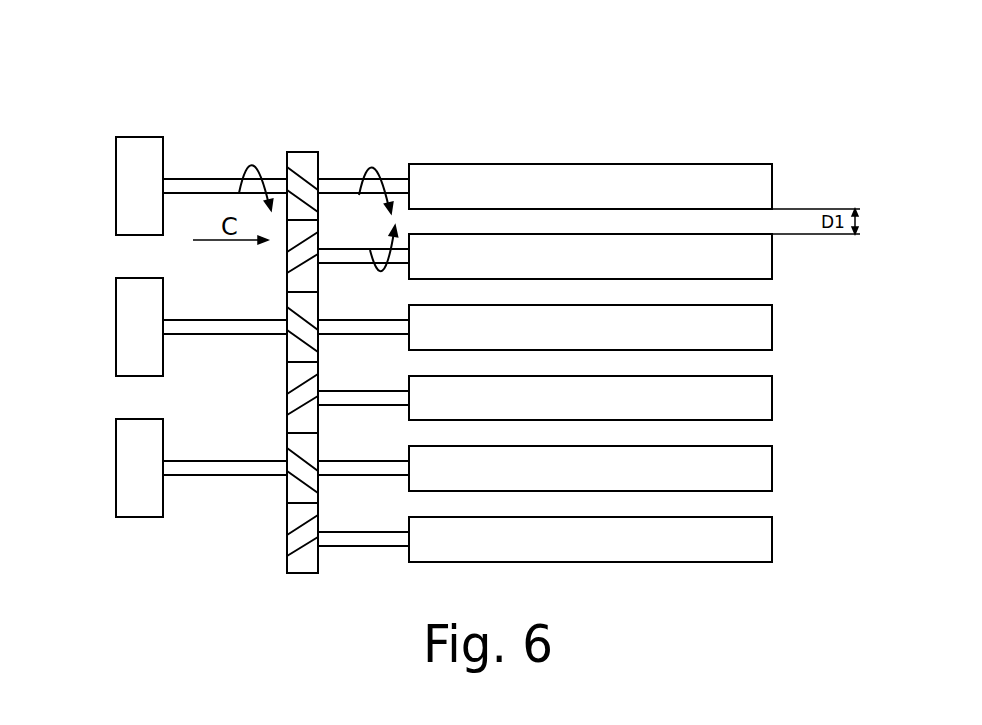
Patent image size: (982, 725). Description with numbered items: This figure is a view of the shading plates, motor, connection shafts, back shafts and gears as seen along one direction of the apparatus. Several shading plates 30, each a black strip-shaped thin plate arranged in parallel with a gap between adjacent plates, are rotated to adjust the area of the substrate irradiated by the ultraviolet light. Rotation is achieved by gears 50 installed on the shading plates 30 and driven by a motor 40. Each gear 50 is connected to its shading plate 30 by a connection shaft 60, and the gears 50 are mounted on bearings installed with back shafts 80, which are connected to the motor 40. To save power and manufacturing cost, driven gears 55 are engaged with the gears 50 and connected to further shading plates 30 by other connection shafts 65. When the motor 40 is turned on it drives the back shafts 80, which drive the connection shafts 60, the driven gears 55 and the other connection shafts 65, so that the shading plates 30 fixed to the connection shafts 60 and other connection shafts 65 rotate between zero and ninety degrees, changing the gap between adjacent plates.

The shading plate 30 is at (705, 185).
The motor 40 is at (138, 160).
The gear 50 is at (302, 167).
The driven gear 55 is at (305, 250).
The connection shaft 60 is at (362, 188).
The other connection shaft 65 is at (370, 250).
The back shaft 80 is at (223, 187).